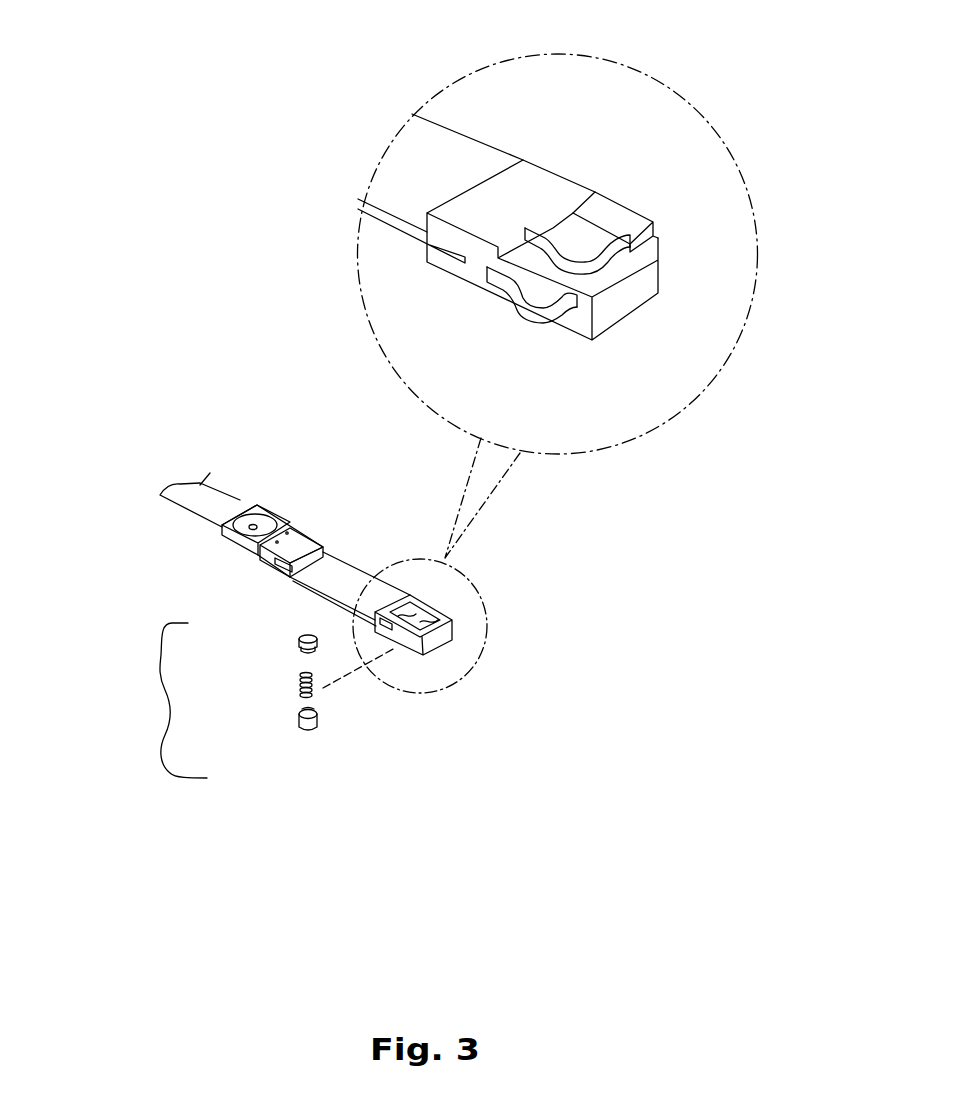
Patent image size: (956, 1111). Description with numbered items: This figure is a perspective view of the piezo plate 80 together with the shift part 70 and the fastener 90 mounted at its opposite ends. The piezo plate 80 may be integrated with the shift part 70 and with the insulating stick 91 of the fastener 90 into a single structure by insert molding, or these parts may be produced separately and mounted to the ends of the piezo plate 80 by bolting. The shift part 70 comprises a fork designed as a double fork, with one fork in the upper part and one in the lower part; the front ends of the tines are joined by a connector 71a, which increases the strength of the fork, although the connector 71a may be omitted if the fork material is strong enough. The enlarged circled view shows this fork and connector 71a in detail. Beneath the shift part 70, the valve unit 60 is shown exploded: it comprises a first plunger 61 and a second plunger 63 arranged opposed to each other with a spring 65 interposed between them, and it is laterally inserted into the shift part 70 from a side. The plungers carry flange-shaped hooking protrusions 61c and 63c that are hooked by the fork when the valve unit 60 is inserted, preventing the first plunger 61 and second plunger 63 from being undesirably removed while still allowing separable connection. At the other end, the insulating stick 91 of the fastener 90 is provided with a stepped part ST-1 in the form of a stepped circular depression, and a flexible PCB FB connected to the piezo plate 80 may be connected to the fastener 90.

The piezo plate 80 is at (450, 153).
The connector 71a is at (623, 273).
The flexible PCB FB is at (203, 505).
The stepped part ST-1 is at (250, 505).
The fastener 90 is at (292, 480).
The insulating stick 91 is at (290, 527).
The shift part 70 is at (423, 603).
The valve unit 60 is at (160, 667).
The first plunger 61 is at (300, 640).
The hooking protrusion 61c is at (298, 650).
The spring 65 is at (300, 682).
The second plunger 63 is at (297, 728).
The hooking protrusion 63c is at (298, 720).